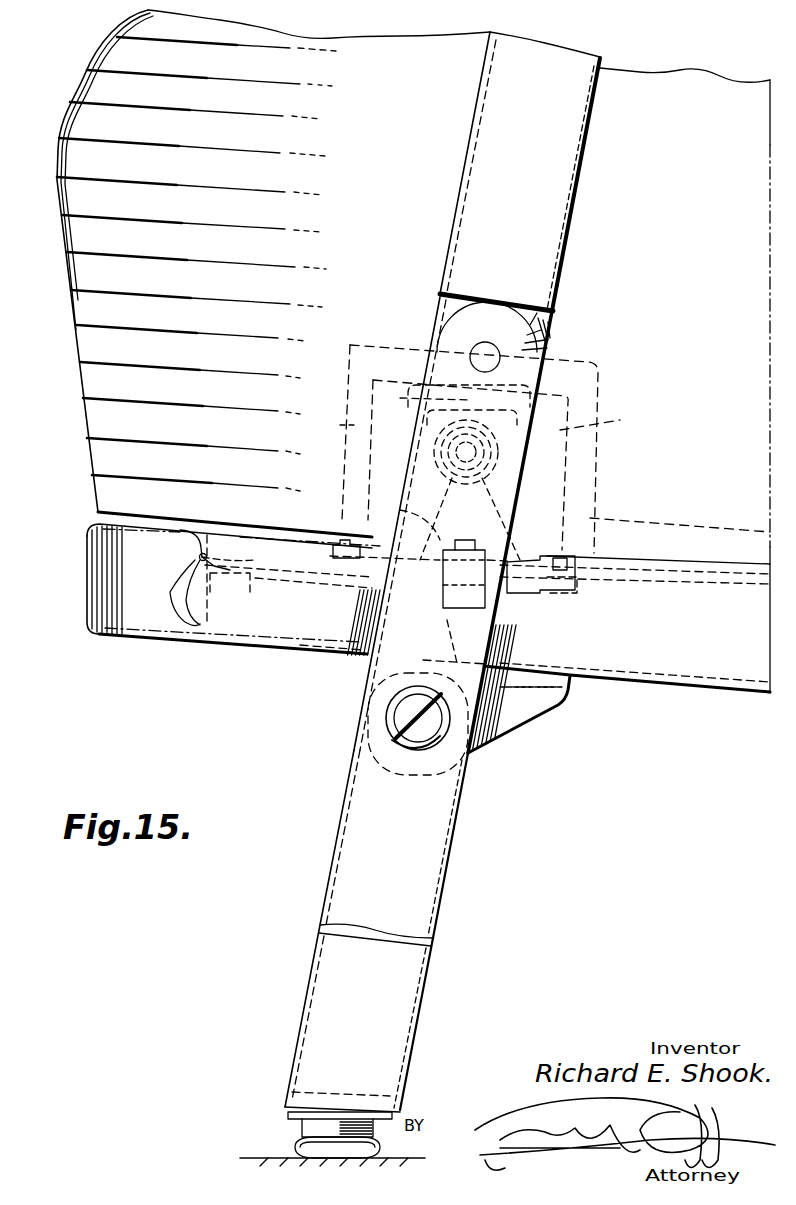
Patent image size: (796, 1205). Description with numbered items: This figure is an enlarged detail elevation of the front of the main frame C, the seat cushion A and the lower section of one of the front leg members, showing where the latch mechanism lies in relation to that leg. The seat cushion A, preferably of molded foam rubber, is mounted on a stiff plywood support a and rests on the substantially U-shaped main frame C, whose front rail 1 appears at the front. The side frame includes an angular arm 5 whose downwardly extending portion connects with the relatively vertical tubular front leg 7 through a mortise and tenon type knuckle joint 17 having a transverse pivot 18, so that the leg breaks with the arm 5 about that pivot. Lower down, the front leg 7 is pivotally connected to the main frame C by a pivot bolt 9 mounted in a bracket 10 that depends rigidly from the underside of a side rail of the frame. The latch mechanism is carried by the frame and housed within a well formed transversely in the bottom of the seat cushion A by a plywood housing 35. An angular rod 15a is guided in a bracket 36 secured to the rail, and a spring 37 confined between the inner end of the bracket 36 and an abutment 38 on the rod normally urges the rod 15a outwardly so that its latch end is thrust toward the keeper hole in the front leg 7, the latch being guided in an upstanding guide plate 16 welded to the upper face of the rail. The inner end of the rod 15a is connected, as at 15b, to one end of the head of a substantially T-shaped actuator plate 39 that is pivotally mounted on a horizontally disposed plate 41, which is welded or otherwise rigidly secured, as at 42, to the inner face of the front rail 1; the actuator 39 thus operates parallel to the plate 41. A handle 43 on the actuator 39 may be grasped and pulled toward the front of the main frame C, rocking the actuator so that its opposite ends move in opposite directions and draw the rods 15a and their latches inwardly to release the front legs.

The seat cushion A is at (74, 349).
The main frame C is at (140, 643).
The front rail 1 is at (88, 588).
The angular arm 5 is at (472, 189).
The front leg 7 is at (348, 820).
The pivot bolt 9 is at (390, 721).
The bracket 10 is at (510, 718).
The rod 15a is at (440, 490).
The connection of rod to actuator 15b is at (345, 546).
The guide plate 16 is at (515, 521).
The knuckle joint 17 is at (524, 332).
The transverse pivot 18 is at (475, 350).
The housing 35 is at (578, 368).
The bracket 36 is at (412, 449).
The spring 37 is at (490, 450).
The abutment 38 is at (495, 470).
The actuator plate 39 is at (578, 584).
The plate 41 is at (206, 596).
The weld securing plate 42 is at (190, 578).
The handle 43 is at (518, 653).
The plywood support a is at (666, 530).